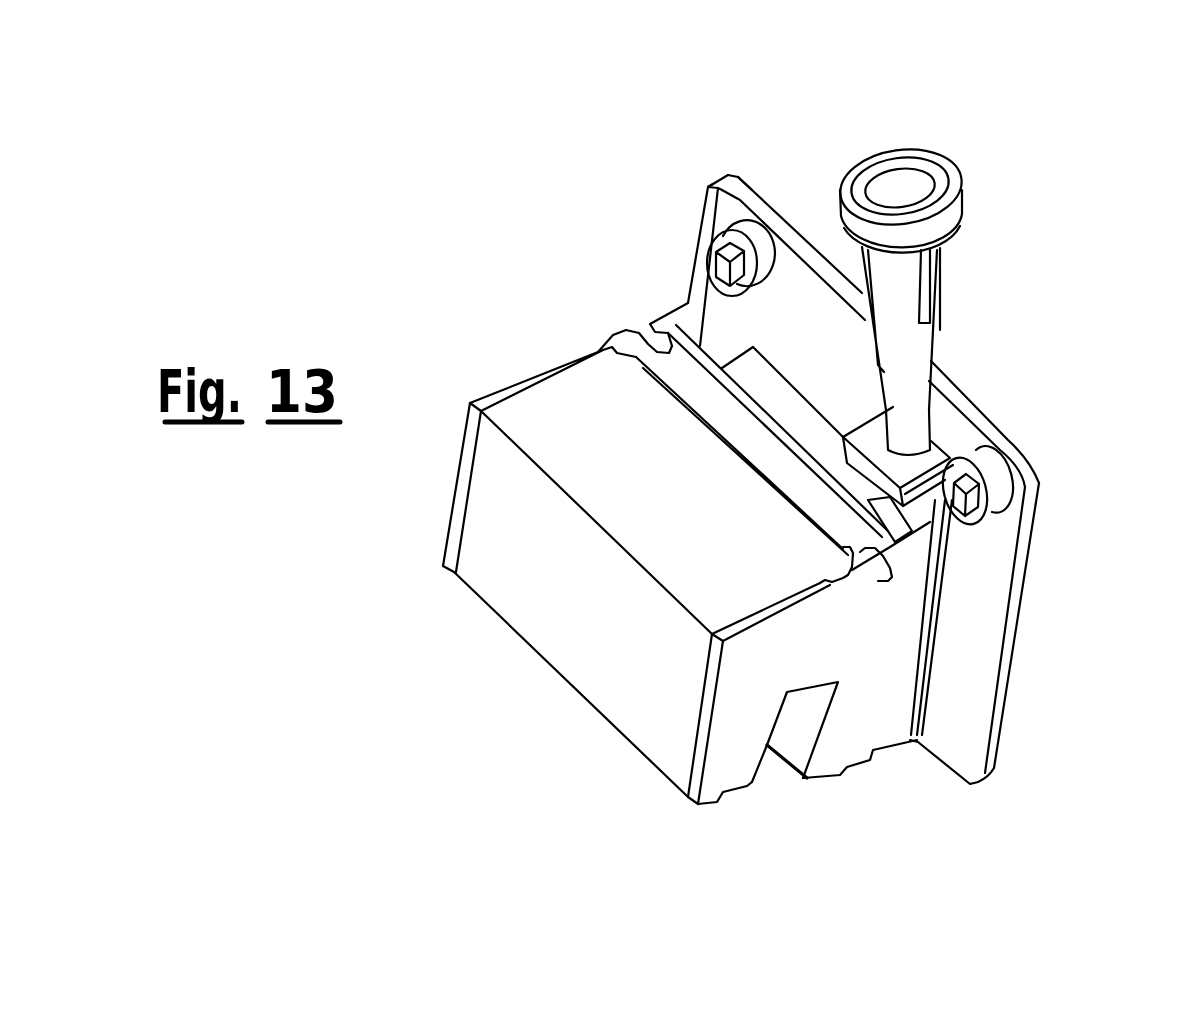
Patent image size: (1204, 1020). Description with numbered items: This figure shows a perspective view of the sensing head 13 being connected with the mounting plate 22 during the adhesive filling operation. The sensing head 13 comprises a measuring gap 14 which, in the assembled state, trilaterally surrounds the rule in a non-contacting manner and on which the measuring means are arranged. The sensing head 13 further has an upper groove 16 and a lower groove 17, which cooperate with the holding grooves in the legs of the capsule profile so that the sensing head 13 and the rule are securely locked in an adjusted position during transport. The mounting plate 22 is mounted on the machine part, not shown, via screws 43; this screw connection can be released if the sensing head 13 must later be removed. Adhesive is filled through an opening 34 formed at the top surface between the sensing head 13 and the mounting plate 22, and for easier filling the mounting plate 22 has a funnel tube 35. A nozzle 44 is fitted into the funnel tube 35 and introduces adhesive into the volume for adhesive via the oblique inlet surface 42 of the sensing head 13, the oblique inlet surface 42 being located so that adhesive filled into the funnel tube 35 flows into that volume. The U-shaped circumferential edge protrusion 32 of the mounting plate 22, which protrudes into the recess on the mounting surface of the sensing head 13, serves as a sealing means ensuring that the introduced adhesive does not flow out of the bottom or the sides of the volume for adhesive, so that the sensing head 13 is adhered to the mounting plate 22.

The sensing head 13 is at (647, 733).
The measuring gap 14 is at (770, 762).
The upper groove 16 is at (655, 322).
The lower groove 17 is at (852, 767).
The mounting plate 22 is at (1004, 689).
The edge protrusion 32 is at (707, 181).
The opening 34 is at (753, 188).
The funnel tube 35 is at (962, 422).
The oblique inlet surface 42 is at (928, 550).
The screws 43 is at (765, 222).
The nozzle 44 is at (937, 160).